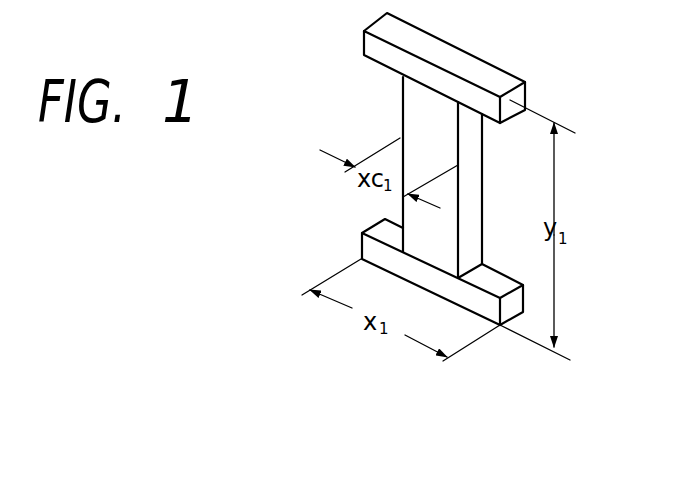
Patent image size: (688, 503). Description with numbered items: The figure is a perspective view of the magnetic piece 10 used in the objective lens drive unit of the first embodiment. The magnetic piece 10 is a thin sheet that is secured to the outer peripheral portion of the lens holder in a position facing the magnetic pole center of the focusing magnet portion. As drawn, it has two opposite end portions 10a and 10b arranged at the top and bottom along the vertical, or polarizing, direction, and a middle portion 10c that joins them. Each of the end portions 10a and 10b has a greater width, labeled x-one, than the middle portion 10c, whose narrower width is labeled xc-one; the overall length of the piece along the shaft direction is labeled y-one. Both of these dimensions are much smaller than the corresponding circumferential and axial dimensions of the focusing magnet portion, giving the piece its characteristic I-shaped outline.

The magnetic piece 10 is at (307, 136).
The end portion 10a is at (375, 53).
The end portion 10b is at (370, 250).
The middle portion 10c is at (410, 104).